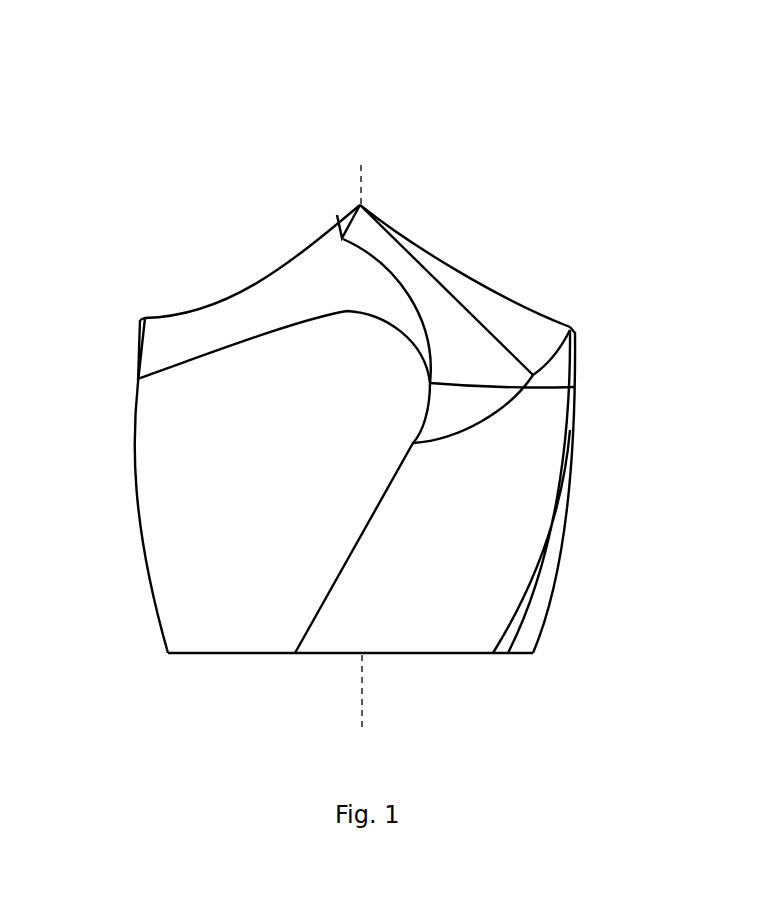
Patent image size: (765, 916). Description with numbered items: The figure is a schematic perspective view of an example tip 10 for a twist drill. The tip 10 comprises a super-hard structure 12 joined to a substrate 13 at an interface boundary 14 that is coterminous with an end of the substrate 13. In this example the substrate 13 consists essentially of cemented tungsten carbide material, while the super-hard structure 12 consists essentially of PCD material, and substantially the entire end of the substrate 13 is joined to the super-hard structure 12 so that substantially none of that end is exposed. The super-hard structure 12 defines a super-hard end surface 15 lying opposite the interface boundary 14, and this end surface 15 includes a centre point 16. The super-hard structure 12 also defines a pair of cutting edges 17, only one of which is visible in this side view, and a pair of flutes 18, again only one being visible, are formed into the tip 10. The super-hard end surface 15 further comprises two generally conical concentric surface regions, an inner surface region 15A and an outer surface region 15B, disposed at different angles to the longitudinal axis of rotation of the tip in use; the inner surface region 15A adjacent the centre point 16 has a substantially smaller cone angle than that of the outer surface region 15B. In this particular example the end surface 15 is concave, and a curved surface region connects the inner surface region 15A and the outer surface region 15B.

The tip 10 is at (130, 185).
The super-hard structure 12 is at (570, 348).
The substrate 13 is at (503, 524).
The interface boundary 14 is at (575, 387).
The super-hard end surface 15 is at (324, 170).
The inner surface region 15A is at (417, 243).
The outer surface region 15B is at (533, 313).
The centre point 16 is at (362, 203).
The cutting edges 17 is at (217, 308).
The flutes 18 is at (292, 434).